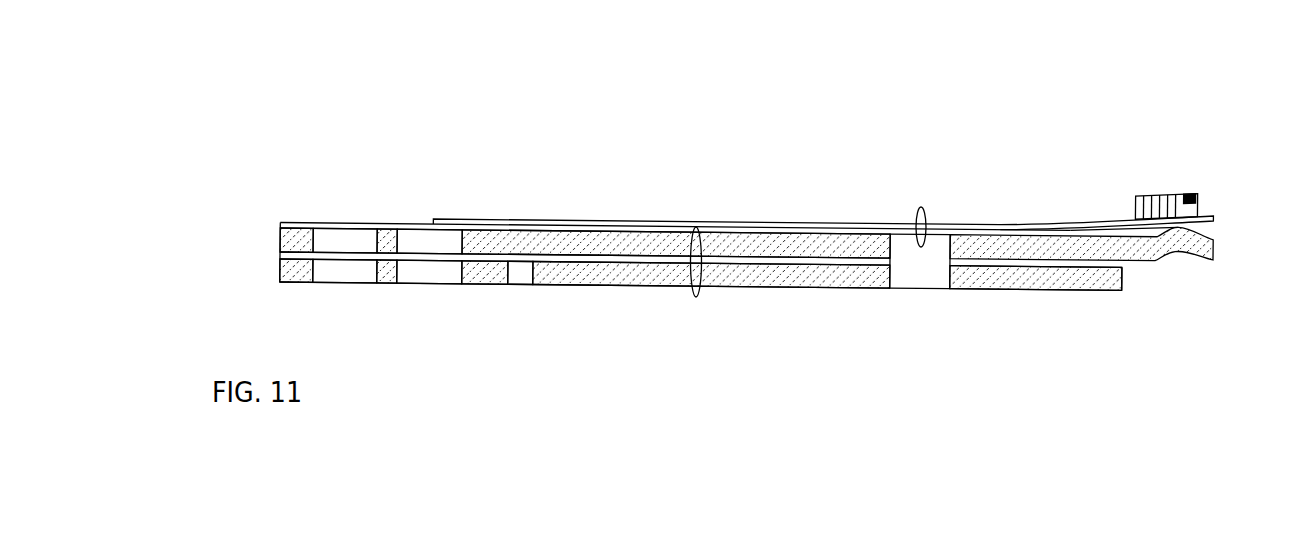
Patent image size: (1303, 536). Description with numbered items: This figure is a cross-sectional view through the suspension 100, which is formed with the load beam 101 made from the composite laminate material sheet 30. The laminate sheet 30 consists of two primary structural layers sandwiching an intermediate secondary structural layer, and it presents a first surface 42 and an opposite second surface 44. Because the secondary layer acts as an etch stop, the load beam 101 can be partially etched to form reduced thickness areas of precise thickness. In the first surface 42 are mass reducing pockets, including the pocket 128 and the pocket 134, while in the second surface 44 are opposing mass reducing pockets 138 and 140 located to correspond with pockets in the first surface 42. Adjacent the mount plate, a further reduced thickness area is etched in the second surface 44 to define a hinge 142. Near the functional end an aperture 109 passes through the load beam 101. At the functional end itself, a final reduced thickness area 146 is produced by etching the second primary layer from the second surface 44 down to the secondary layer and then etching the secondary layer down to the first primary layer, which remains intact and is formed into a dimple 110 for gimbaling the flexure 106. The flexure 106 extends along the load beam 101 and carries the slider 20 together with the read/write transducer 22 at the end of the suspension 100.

The suspension 100 is at (296, 123).
The composite laminate material sheet 30 is at (270, 228).
The mass reducing pocket 128 is at (345, 235).
The mass reducing pocket 134 is at (423, 237).
The mass reducing pocket 138 is at (348, 273).
The mass reducing pocket 140 is at (428, 270).
The hinge 142 is at (525, 275).
The load beam 101 is at (699, 228).
The first surface 42 is at (833, 226).
The flexure 106 is at (920, 208).
The second surface 44 is at (787, 283).
The aperture 109 is at (920, 275).
The reduced thickness area 146 is at (1143, 277).
The dimple 110 is at (1210, 243).
The slider 20 is at (1155, 193).
The read/write transducer 22 is at (1197, 193).